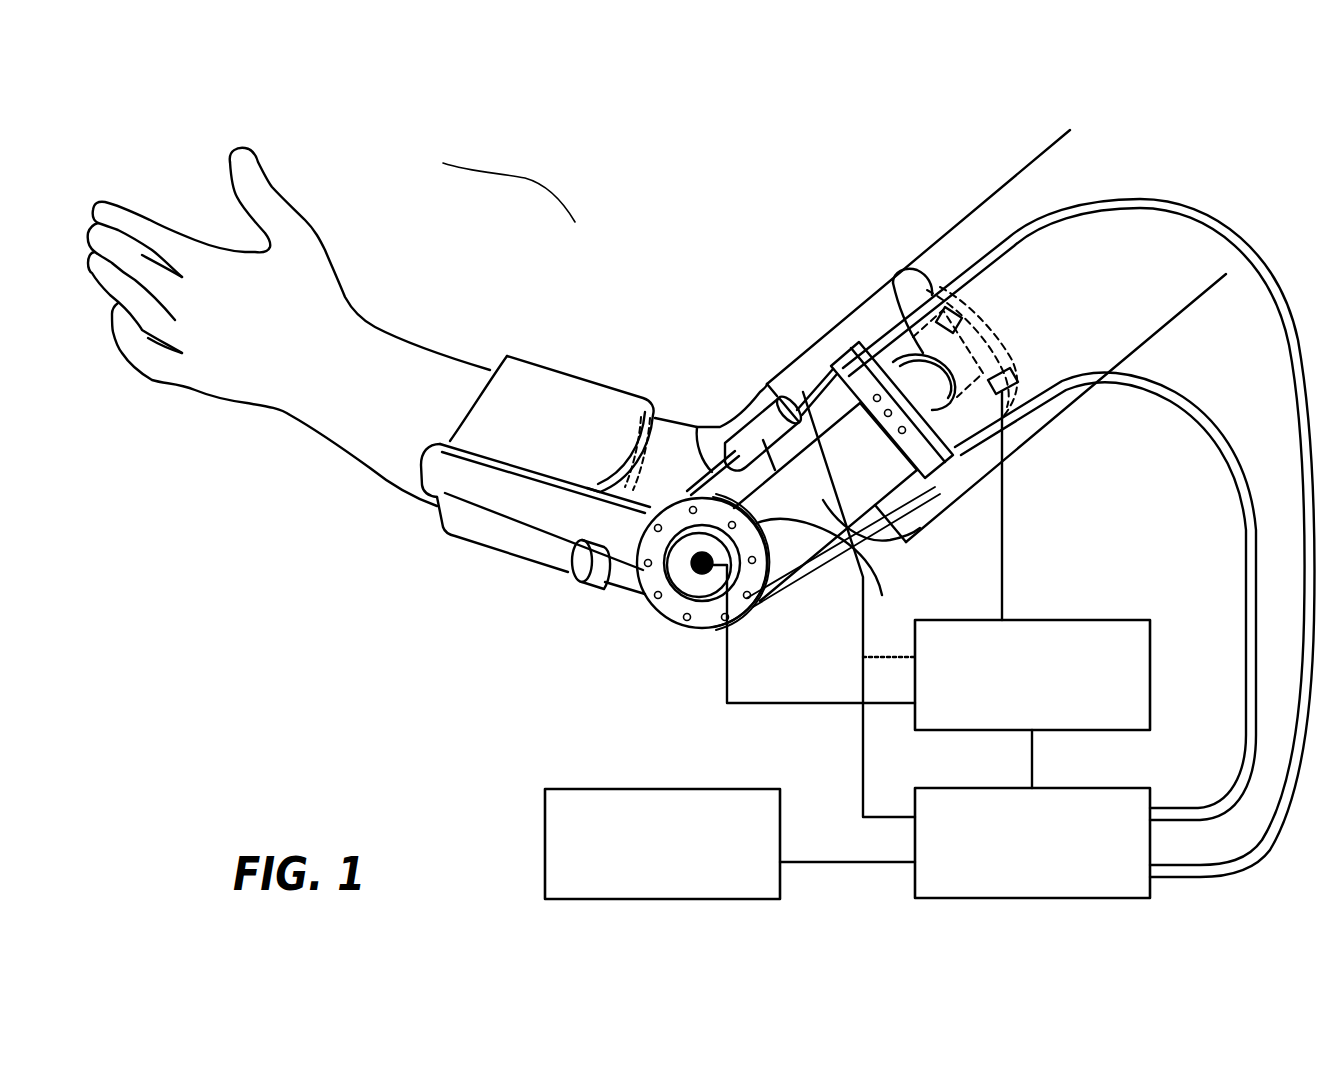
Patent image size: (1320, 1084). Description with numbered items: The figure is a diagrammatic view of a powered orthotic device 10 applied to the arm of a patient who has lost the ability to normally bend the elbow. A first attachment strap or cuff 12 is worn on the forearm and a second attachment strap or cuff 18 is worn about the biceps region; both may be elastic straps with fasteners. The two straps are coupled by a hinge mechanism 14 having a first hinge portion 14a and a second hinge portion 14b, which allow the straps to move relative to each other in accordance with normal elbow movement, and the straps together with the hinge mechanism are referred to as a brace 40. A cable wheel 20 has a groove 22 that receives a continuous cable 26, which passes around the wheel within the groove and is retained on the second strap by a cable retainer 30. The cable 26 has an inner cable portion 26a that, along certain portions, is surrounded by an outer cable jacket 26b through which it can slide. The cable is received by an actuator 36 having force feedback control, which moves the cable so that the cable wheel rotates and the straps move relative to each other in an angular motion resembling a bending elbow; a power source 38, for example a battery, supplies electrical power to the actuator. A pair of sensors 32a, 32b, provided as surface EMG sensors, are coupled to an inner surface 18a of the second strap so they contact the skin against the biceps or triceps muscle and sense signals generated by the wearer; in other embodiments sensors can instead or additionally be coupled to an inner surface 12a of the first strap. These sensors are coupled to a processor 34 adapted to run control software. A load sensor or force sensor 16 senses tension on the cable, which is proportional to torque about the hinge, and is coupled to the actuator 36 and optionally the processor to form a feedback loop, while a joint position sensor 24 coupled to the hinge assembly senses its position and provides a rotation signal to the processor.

The powered orthotic device 10 is at (494, 190).
The first attachment strap or cuff 12 is at (450, 528).
The inner surface of the first strap 12a is at (653, 413).
The hinge mechanism 14 is at (503, 493).
The first hinge portion 14a is at (600, 525).
The second hinge portion 14b is at (847, 437).
The load sensor or force sensor 16 is at (760, 420).
The second attachment strap or cuff 18 is at (860, 305).
The inner surface of the second strap 18a is at (990, 340).
The cable wheel 20 is at (648, 602).
The groove 22 is at (775, 470).
The joint position sensor 24 is at (703, 578).
The continuous cable 26 is at (790, 600).
The inner cable portion 26a is at (697, 425).
The outer cable jacket 26b is at (1152, 197).
The cable retainer 30 is at (935, 455).
The sensor 32a is at (983, 287).
The sensor 32b is at (1010, 373).
The processor 34 is at (1103, 618).
The actuator 36 is at (1113, 787).
The power source 38 is at (637, 789).
The brace 40 is at (535, 355).